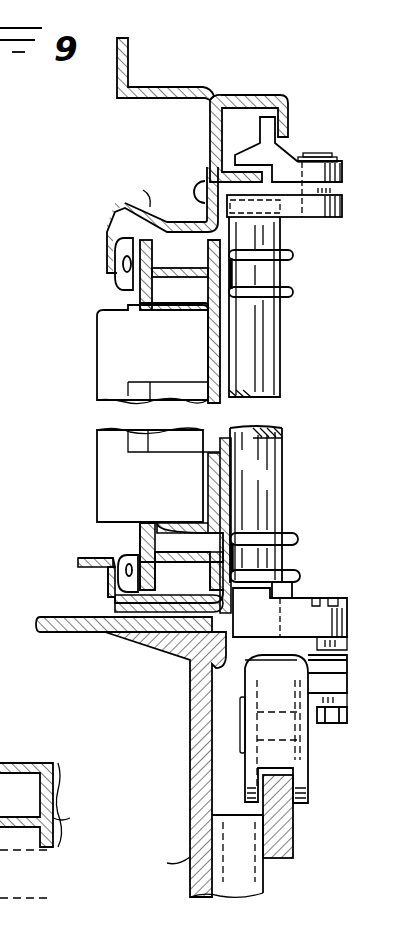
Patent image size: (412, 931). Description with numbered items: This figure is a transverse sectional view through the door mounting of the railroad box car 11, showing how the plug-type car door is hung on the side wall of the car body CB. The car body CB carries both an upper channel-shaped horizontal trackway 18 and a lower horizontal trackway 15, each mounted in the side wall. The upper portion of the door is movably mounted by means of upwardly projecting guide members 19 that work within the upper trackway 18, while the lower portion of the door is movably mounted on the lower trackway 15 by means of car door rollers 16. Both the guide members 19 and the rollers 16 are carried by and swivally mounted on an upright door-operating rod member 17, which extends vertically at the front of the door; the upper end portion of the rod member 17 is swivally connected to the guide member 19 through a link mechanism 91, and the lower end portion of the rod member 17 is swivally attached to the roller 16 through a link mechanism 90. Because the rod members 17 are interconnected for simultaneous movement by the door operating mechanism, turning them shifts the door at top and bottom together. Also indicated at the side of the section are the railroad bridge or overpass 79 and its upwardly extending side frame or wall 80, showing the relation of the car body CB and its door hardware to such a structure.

The upper channel-shaped horizontal trackway 18 is at (245, 100).
The guide member 19 is at (267, 133).
The link mechanism 91 is at (340, 207).
The door-operating rod member 17 is at (273, 332).
The side frame 80 is at (0, 428).
The railroad bridge 79 is at (0, 472).
The link mechanism 90 is at (352, 628).
The car door roller 16 is at (307, 767).
The lower horizontal trackway 15 is at (283, 842).
The railroad box car 11 is at (22, 770).
The car body CB is at (142, 520).